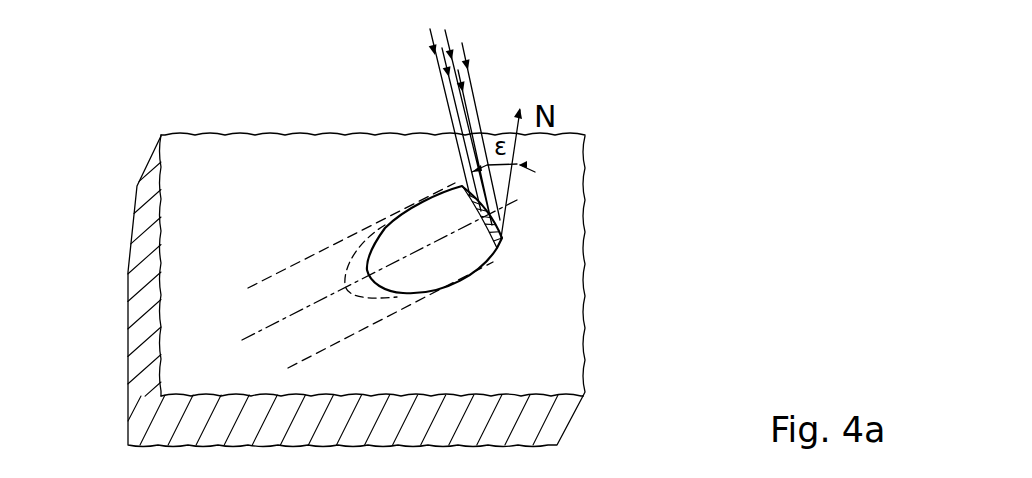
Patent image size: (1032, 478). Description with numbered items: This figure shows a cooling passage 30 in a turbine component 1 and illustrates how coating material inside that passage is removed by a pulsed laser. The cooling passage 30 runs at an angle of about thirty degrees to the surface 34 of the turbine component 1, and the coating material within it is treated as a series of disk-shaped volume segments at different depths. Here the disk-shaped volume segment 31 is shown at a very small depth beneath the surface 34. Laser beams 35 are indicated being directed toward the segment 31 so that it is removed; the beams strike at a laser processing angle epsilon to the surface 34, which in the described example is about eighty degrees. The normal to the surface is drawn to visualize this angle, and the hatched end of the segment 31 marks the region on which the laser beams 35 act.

The turbine component 1 is at (407, 249).
The cooling passage 30 is at (423, 227).
The disk-shaped volume segment 31 is at (503, 233).
The surface 34 is at (493, 343).
The laser beams 35 is at (474, 87).